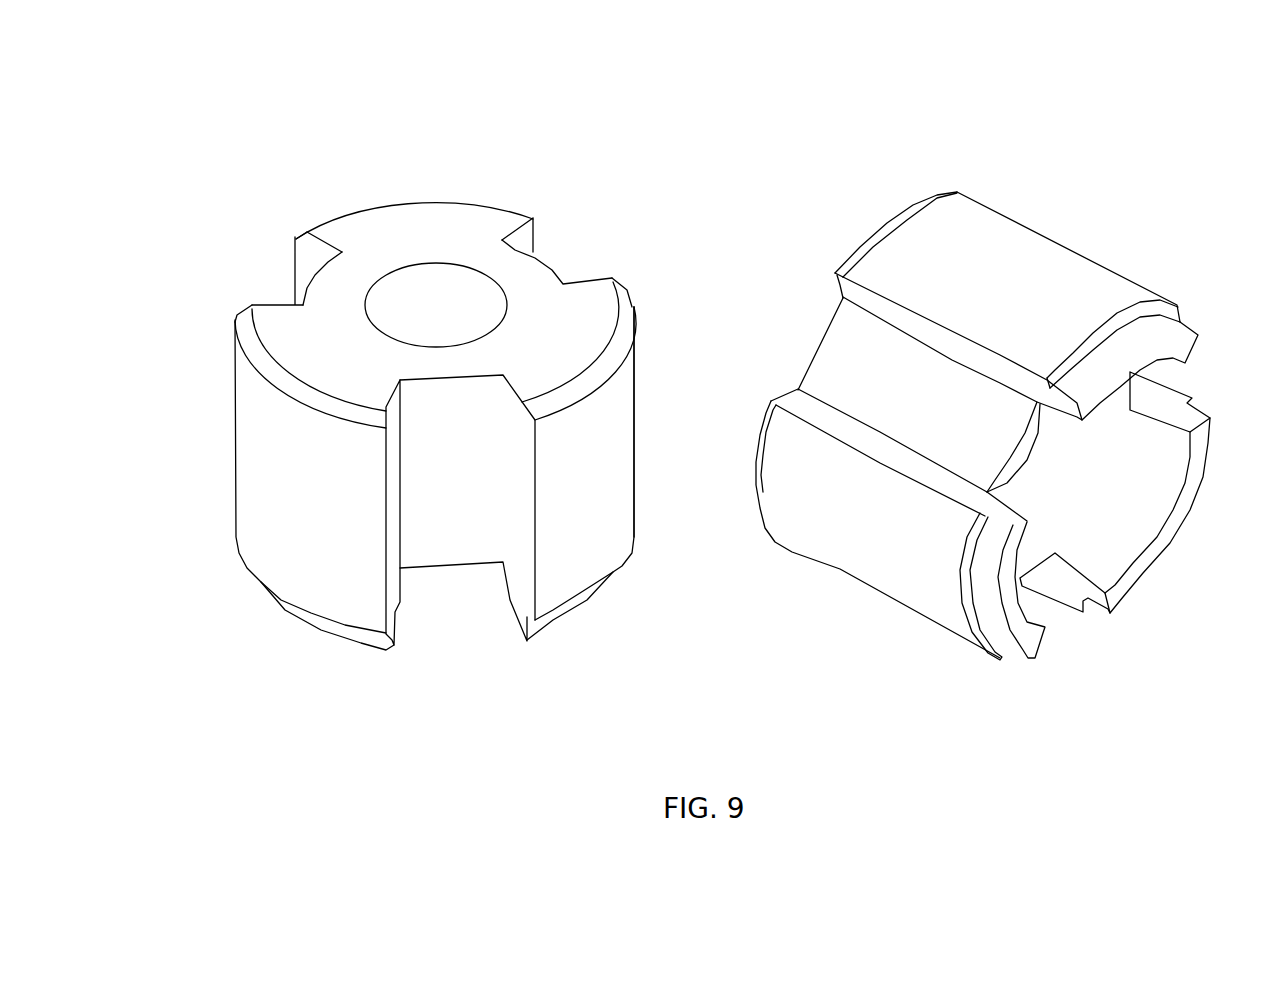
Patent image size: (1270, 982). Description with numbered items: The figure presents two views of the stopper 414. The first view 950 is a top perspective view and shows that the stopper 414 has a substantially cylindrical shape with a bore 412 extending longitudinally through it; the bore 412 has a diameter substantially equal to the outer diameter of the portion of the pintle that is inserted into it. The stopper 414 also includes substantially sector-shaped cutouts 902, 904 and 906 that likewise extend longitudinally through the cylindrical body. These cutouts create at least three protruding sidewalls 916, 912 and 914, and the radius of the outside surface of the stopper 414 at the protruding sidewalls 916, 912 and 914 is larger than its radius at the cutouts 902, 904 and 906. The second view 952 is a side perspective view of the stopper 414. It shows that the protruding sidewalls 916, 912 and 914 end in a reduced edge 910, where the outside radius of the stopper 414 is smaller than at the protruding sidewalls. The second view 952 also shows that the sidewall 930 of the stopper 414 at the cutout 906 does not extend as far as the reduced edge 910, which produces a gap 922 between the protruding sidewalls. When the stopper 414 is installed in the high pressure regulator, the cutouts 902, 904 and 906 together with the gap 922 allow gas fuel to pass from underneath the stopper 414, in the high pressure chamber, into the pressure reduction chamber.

The first view 950 is at (435, 351).
The second view 952 is at (1006, 368).
The stopper 414 is at (591, 200).
The bore 412 is at (447, 303).
The protruding sidewall 912 is at (435, 278).
The sector-shaped cutout 902 is at (273, 261).
The sector-shaped cutout 904 is at (571, 239).
The sector-shaped cutout 906 is at (614, 484).
The protruding sidewall 914 is at (907, 364).
The protruding sidewall 916 is at (619, 539).
The sidewall 930 is at (874, 423).
The gap 922 is at (1051, 457).
The reduced edge 910 is at (1180, 441).